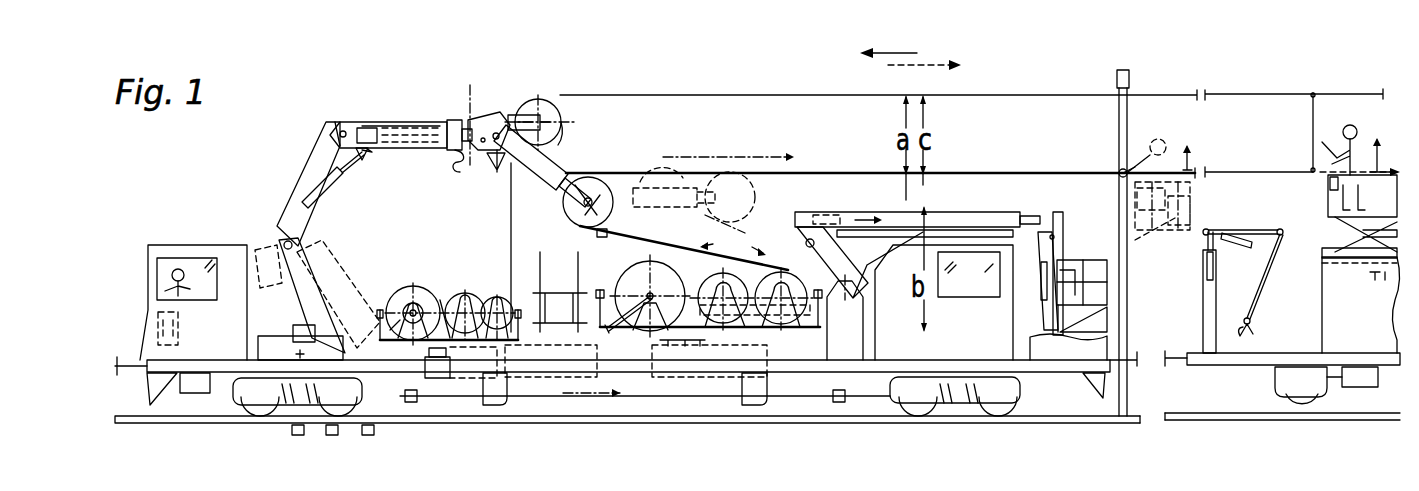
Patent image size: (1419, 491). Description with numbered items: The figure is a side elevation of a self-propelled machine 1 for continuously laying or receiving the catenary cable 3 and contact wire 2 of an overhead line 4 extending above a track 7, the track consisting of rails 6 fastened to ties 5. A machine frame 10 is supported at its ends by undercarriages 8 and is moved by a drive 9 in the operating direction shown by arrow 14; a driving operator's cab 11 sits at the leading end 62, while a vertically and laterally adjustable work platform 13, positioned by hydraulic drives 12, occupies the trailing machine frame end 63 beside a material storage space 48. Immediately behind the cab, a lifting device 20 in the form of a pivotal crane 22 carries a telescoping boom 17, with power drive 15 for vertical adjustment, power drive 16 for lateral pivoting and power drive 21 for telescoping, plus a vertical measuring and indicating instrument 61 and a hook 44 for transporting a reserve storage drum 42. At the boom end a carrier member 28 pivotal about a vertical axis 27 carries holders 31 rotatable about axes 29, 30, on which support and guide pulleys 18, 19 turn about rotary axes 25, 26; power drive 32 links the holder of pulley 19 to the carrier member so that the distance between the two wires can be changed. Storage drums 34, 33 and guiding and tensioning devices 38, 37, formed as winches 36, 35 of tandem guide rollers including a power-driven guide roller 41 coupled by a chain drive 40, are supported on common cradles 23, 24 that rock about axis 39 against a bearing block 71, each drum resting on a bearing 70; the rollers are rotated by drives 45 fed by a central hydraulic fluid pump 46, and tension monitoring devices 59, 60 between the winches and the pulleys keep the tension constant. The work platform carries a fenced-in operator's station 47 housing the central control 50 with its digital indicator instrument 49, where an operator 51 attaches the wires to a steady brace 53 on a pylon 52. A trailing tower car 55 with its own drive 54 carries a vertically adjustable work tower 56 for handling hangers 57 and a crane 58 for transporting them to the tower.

The self-propelled machine 1 is at (242, 169).
The contact wire 2 is at (1215, 170).
The catenary cable 3 is at (1222, 90).
The overhead line 4 is at (1130, 110).
The ties 5 is at (370, 432).
The rails 6 is at (180, 428).
The track 7 is at (158, 430).
The undercarriages 8 is at (290, 397).
The drive 9 is at (497, 400).
The machine frame 10 is at (1025, 365).
The driving operator's cab 11 is at (183, 248).
The hydraulic drives 12 is at (850, 270).
The work platform 13 is at (1068, 238).
The arrow 14 is at (915, 50).
The power drive 15 is at (322, 200).
The power drive 16 is at (300, 330).
The boom 17 is at (335, 122).
The support and guide pulley 18 is at (520, 108).
The support and guide pulley 19 is at (588, 185).
The lifting device 20 is at (292, 190).
The power drive 21 is at (380, 135).
The pivotal crane 22 is at (383, 112).
The cradle 23 is at (462, 368).
The cradle 24 is at (785, 322).
The rotary axis 25 is at (548, 110).
The rotary axis 26 is at (566, 208).
The vertical axis 27 is at (470, 103).
The carrier member 28 is at (490, 120).
The axis 29 is at (565, 132).
The axis 30 is at (600, 180).
The holder 31 is at (580, 174).
The power drive 32 is at (494, 173).
The storage drum 33 is at (652, 280).
The storage drum 34 is at (413, 300).
The winch 35 is at (738, 292).
The winch 36 is at (465, 297).
The guiding and tensioning device 37 is at (715, 325).
The guiding and tensioning device 38 is at (445, 300).
The axis 39 is at (333, 305).
The chain drive 40 is at (780, 325).
The power-driven guide roller 41 is at (497, 297).
The reserve storage drum 42 is at (555, 282).
The hook 44 is at (458, 185).
The drive control 45 is at (492, 345).
The central hydraulic fluid pump 46 is at (437, 380).
The operator's station 47 is at (1110, 272).
The material storage space 48 is at (1070, 348).
The digital indicator instrument 49 is at (1066, 272).
The central control 50 is at (1085, 285).
The operator 51 is at (1176, 190).
The pylon 52 is at (1118, 330).
The steady brace 53 is at (1128, 125).
The drive 54 is at (1358, 390).
The tower car 55 is at (1268, 374).
The work tower 56 is at (1338, 225).
The hangers 57 is at (1313, 118).
The crane 58 is at (1214, 301).
The tension monitoring device 59 is at (641, 284).
The tension monitoring device 60 is at (512, 280).
The vertical measuring and indicating instrument 61 is at (360, 153).
The leading end 62 is at (140, 353).
The trailing machine frame end 63 is at (1112, 375).
The bearing 70 is at (650, 300).
The bearing block 71 is at (336, 380).